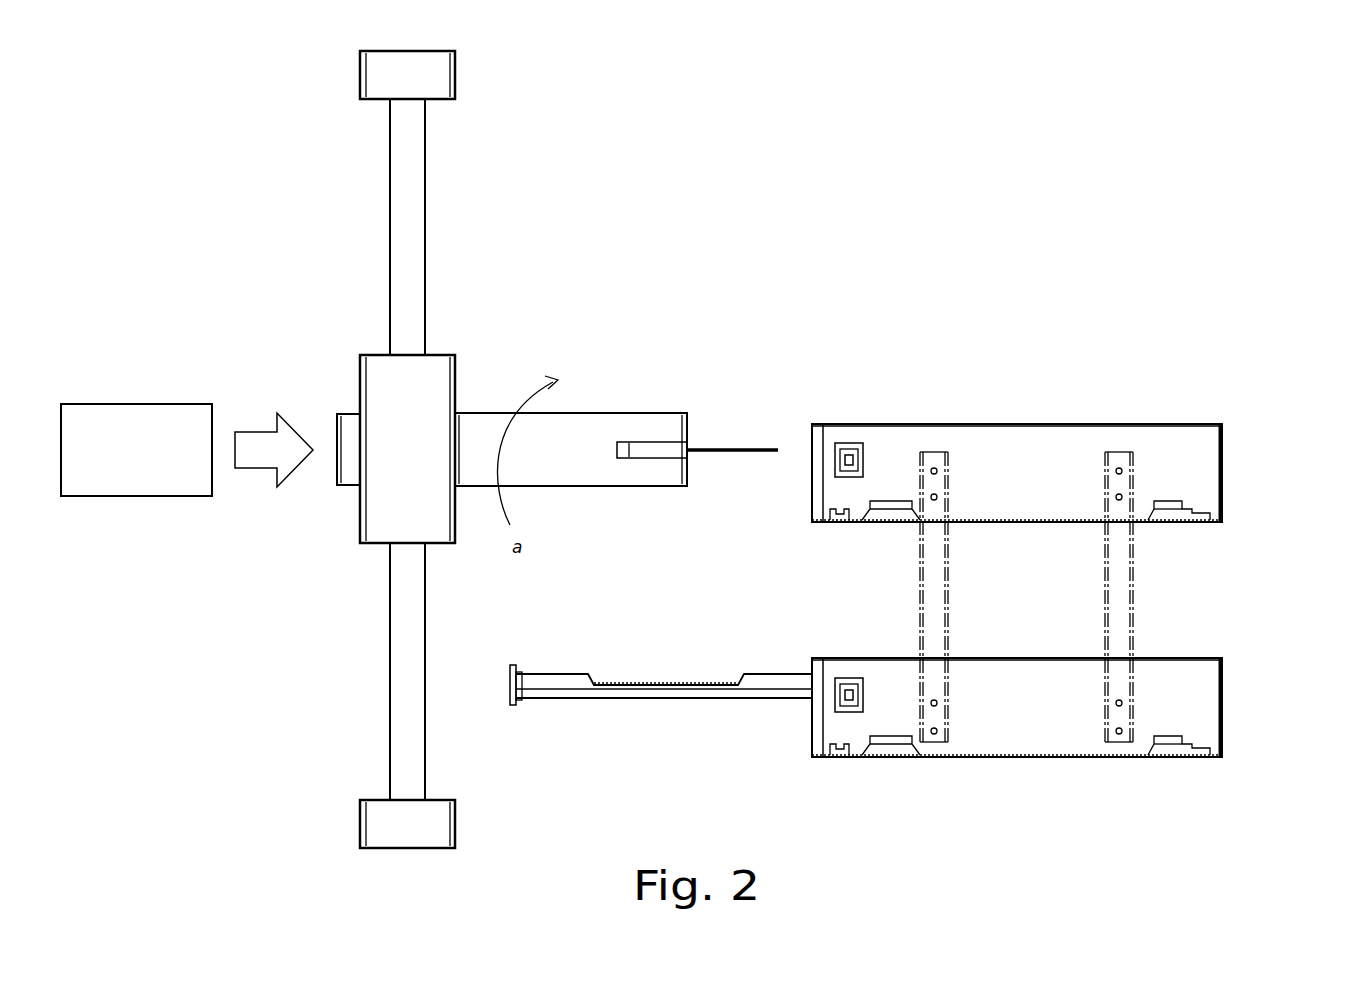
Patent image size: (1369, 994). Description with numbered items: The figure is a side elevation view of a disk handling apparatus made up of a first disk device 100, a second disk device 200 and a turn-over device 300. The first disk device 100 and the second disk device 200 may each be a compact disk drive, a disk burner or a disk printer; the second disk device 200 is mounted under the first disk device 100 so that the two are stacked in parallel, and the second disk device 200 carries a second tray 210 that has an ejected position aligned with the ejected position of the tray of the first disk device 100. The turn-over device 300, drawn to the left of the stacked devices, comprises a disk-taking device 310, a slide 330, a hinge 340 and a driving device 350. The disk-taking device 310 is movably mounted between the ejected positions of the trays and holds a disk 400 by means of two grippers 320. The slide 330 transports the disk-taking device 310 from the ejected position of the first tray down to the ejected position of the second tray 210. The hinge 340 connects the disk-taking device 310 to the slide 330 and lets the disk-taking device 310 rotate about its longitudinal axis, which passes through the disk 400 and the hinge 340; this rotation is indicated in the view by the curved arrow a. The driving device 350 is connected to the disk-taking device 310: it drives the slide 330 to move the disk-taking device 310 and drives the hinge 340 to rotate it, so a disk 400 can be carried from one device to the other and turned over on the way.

The first disk device 100 is at (1193, 470).
The second disk device 200 is at (1193, 707).
The second tray 210 is at (762, 690).
The turn-over device 300 is at (152, 196).
The disk-taking device 310 is at (598, 435).
The grippers 320 is at (655, 450).
The slide 330 is at (375, 357).
The hinge 340 is at (352, 486).
The driving device 350 is at (133, 404).
The disk 400 is at (728, 445).